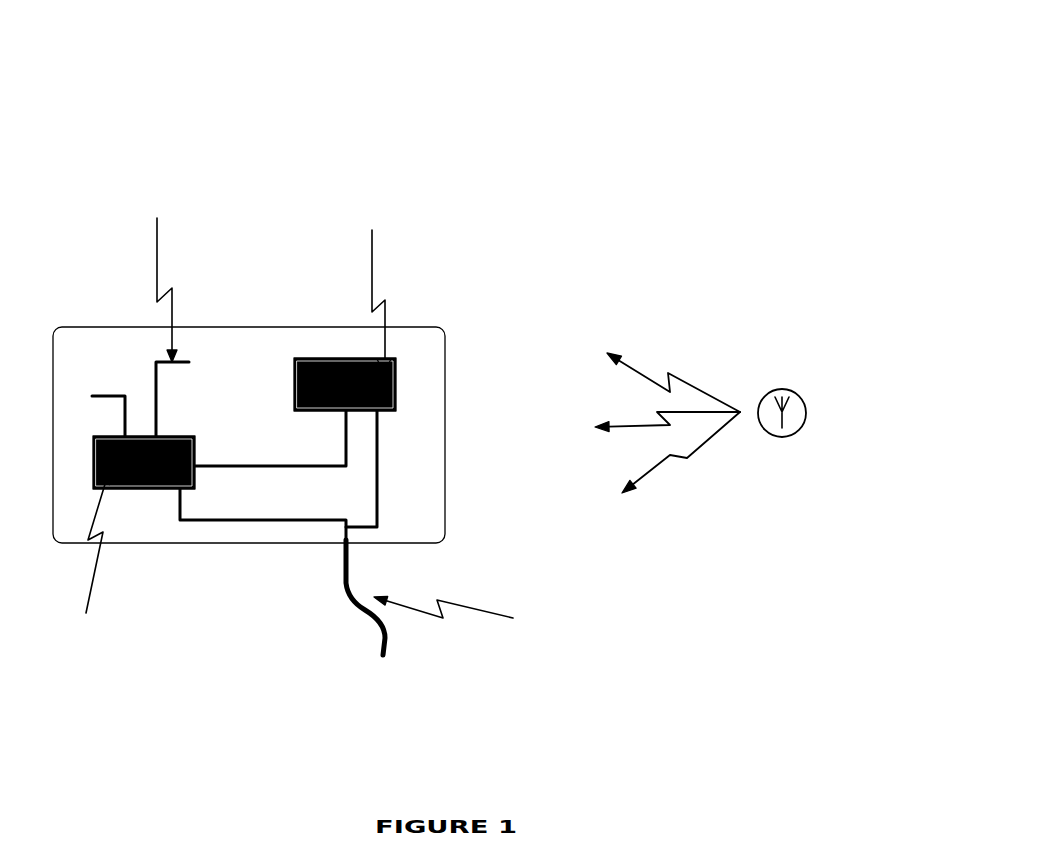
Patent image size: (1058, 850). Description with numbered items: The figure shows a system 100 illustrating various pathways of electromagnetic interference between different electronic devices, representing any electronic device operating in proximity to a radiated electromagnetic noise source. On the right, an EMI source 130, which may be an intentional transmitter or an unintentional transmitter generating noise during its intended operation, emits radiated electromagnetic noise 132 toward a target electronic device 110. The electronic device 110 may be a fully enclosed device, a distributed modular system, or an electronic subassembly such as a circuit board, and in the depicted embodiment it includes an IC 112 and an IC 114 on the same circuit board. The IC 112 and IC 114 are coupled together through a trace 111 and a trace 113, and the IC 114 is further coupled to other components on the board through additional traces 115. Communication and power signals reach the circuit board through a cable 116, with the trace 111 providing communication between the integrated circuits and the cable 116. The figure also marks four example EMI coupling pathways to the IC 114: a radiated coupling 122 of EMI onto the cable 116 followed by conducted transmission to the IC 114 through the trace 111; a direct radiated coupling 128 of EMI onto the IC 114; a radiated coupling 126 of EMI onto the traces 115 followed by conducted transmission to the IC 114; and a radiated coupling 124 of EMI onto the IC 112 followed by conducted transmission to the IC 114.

The system 100 is at (676, 36).
The target electronic device 110 is at (249, 435).
The trace 111 is at (250, 522).
The IC 112 is at (345, 384).
The trace 113 is at (284, 465).
The IC 114 is at (144, 462).
The traces 115 is at (155, 380).
The cable 116 is at (365, 616).
The radiated coupling 122 is at (473, 609).
The radiated coupling 124 is at (372, 255).
The radiated coupling 126 is at (157, 245).
The direct radiated coupling 128 is at (90, 593).
The EMI source 130 is at (803, 427).
The radiated electromagnetic noise 132 is at (715, 430).